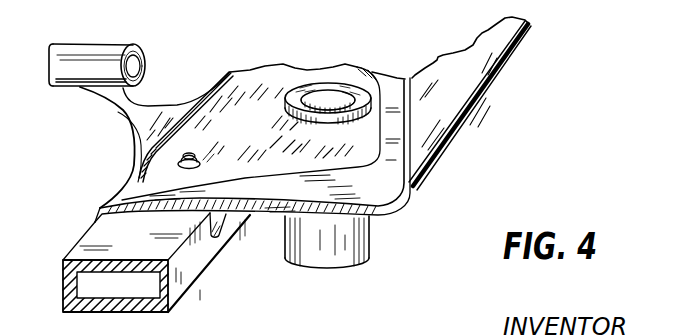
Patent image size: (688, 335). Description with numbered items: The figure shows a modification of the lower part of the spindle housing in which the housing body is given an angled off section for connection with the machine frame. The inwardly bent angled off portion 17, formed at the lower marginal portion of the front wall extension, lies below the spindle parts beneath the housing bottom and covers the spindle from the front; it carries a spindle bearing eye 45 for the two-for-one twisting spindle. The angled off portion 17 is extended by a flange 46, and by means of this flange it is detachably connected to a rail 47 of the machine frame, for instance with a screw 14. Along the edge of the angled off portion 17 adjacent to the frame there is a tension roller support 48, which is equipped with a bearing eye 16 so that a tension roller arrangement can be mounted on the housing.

The screw 14 is at (193, 150).
The bearing eye 16 is at (98, 56).
The angled off portion 17 is at (388, 181).
The spindle bearing eye 45 is at (318, 86).
The flange 46 is at (290, 158).
The rail 47 is at (110, 237).
The tension roller support 48 is at (137, 123).